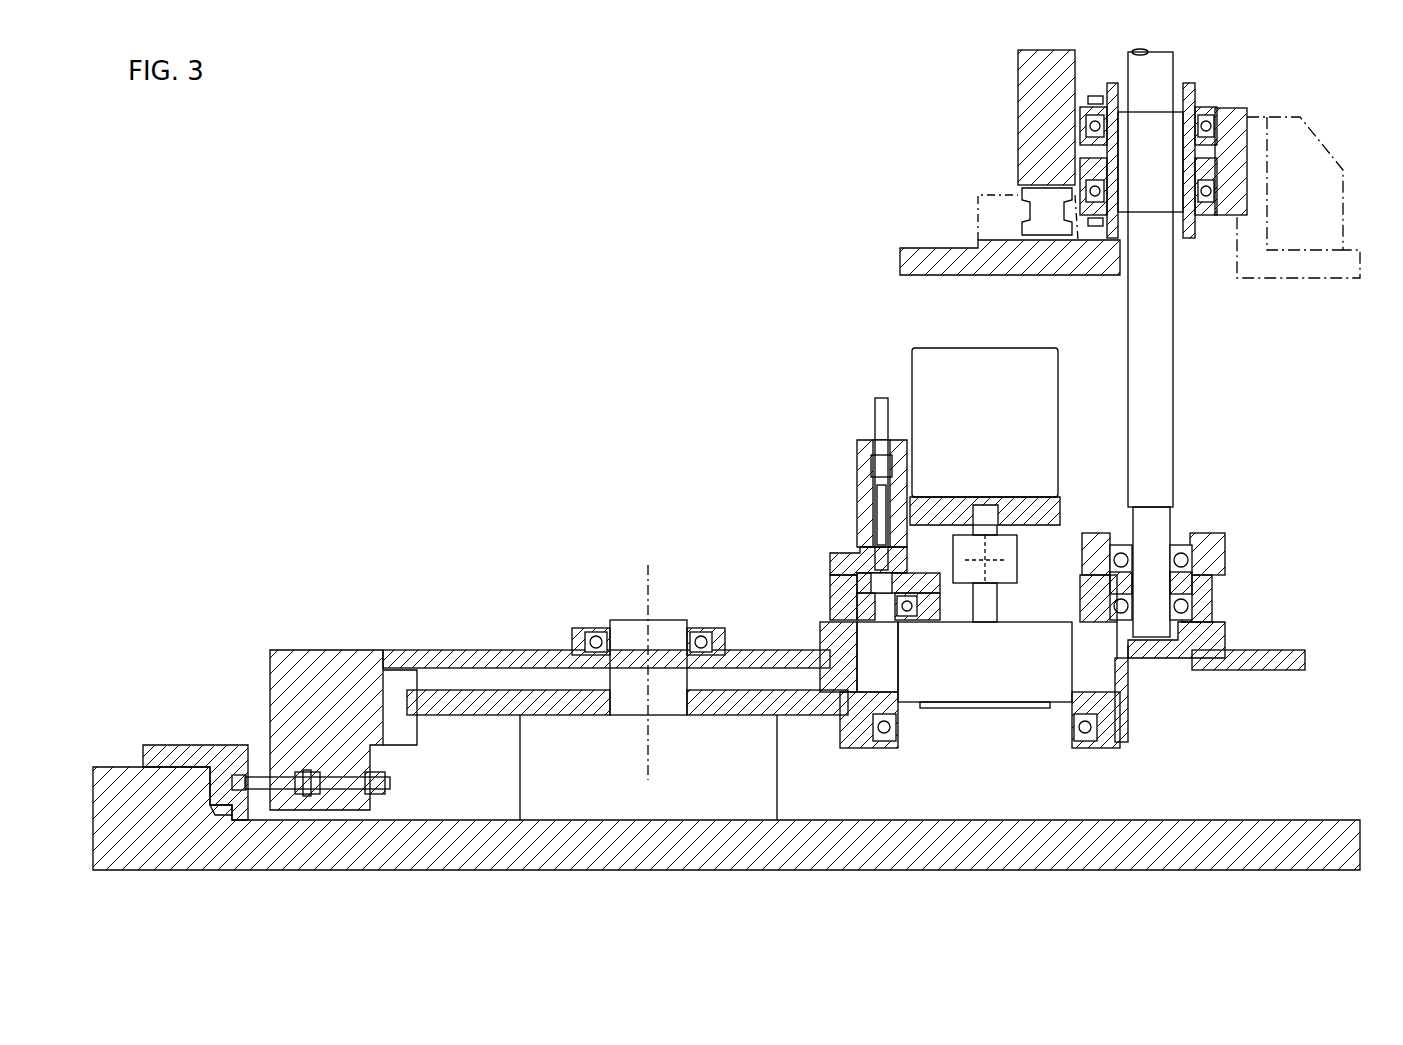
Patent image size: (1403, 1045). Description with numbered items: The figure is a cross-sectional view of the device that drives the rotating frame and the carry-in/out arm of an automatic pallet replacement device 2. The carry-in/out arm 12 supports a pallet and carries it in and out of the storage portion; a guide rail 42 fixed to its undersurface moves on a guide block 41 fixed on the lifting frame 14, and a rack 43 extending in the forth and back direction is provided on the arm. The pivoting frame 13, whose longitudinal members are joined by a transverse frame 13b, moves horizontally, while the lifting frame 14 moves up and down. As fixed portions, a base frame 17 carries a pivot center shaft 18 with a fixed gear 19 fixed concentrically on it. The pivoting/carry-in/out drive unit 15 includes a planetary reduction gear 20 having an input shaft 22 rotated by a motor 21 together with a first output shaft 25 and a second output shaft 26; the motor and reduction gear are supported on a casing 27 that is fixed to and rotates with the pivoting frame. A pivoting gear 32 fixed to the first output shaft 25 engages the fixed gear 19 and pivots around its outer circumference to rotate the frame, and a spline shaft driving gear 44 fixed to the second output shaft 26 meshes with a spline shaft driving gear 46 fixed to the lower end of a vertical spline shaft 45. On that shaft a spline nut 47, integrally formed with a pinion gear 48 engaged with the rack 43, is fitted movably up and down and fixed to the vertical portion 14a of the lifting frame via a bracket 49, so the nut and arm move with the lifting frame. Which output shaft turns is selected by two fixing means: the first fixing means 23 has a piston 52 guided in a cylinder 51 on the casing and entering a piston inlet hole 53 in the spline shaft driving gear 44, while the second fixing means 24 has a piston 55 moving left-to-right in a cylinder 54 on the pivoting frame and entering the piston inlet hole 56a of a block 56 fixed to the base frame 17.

The automatic pallet replacement device 2 is at (1268, 90).
The carry-in/out arm 12 is at (1018, 90).
The pivoting frame 13 is at (310, 650).
The transverse frame 13b is at (485, 650).
The lifting frame 14 is at (900, 258).
The vertical portion 14a is at (1265, 198).
The pivoting/carry-in/out drive unit 15 is at (1232, 520).
The base frame 17 is at (1010, 870).
The pivot center shaft 18 is at (662, 630).
The fixed gear 19 is at (540, 690).
The planetary reduction gear 20 is at (1085, 622).
The motor 21 is at (945, 348).
The input shaft 22 is at (990, 600).
The first fixing means 23 is at (857, 448).
The second fixing means 24 is at (300, 790).
The first output shaft 25 is at (1030, 690).
The second output shaft 26 is at (982, 640).
The casing 27 is at (830, 580).
The pivoting gear 32 is at (900, 748).
The guide block 41 is at (978, 210).
The guide rail 42 is at (1035, 200).
The rack 43 is at (1082, 165).
The spline shaft driving gear 44 is at (1130, 670).
The spline shaft 45 is at (1175, 345).
The spline shaft driving gear 46 is at (1215, 590).
The spline nut 47 is at (1155, 115).
The pinion gear 48 is at (1098, 95).
The bracket 49 is at (1248, 150).
The cylinder 51 is at (857, 480).
The piston 52 is at (880, 512).
The piston inlet hole 53 is at (830, 598).
The cylinder 54 is at (330, 795).
The piston 55 is at (380, 795).
The block 56 is at (190, 745).
The piston inlet hole 56a is at (232, 800).